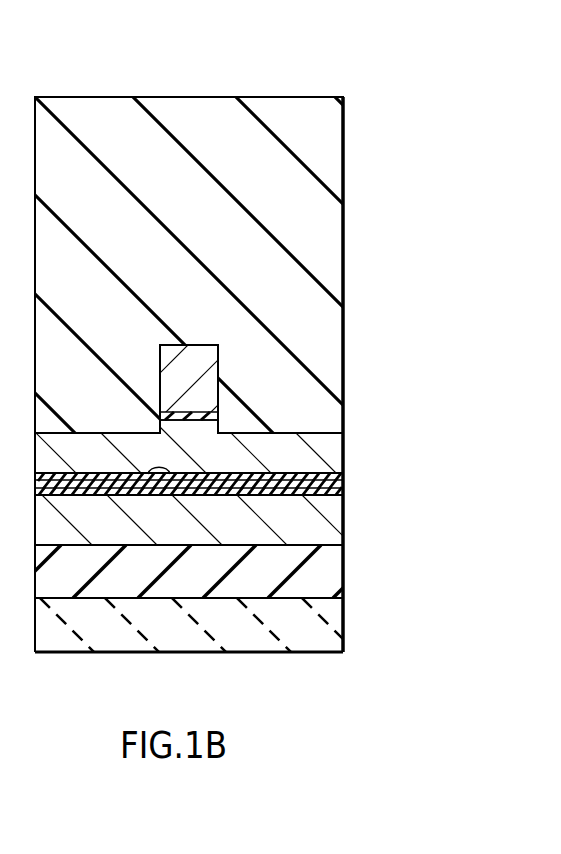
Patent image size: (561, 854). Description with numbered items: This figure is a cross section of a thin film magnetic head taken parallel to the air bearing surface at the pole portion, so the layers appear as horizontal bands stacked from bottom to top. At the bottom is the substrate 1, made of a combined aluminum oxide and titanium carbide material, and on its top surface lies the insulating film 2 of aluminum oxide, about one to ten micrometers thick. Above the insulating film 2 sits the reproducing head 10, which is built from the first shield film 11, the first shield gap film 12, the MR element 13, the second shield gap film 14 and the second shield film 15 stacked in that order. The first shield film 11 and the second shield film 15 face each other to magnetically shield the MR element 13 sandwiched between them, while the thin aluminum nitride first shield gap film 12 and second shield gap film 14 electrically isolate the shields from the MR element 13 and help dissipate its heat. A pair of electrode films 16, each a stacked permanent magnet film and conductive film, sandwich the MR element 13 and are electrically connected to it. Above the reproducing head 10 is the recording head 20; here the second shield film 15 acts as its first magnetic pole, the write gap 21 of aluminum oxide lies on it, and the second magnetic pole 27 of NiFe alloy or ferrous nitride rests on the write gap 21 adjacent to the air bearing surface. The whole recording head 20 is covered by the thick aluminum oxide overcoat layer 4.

The substrate 1 is at (342, 627).
The insulating film 2 is at (342, 580).
The overcoat layer 4 is at (273, 112).
The reproducing head 10 is at (438, 460).
The first shield film 11 is at (342, 542).
The first shield gap film 12 is at (342, 503).
The MR element 13 is at (343, 471).
The second shield gap film 14 is at (228, 481).
The second shield film 15 is at (338, 427).
The electrode film 16 is at (272, 476).
The recording head 20 is at (428, 343).
The write gap 21 is at (165, 412).
The second magnetic pole 27 is at (197, 360).